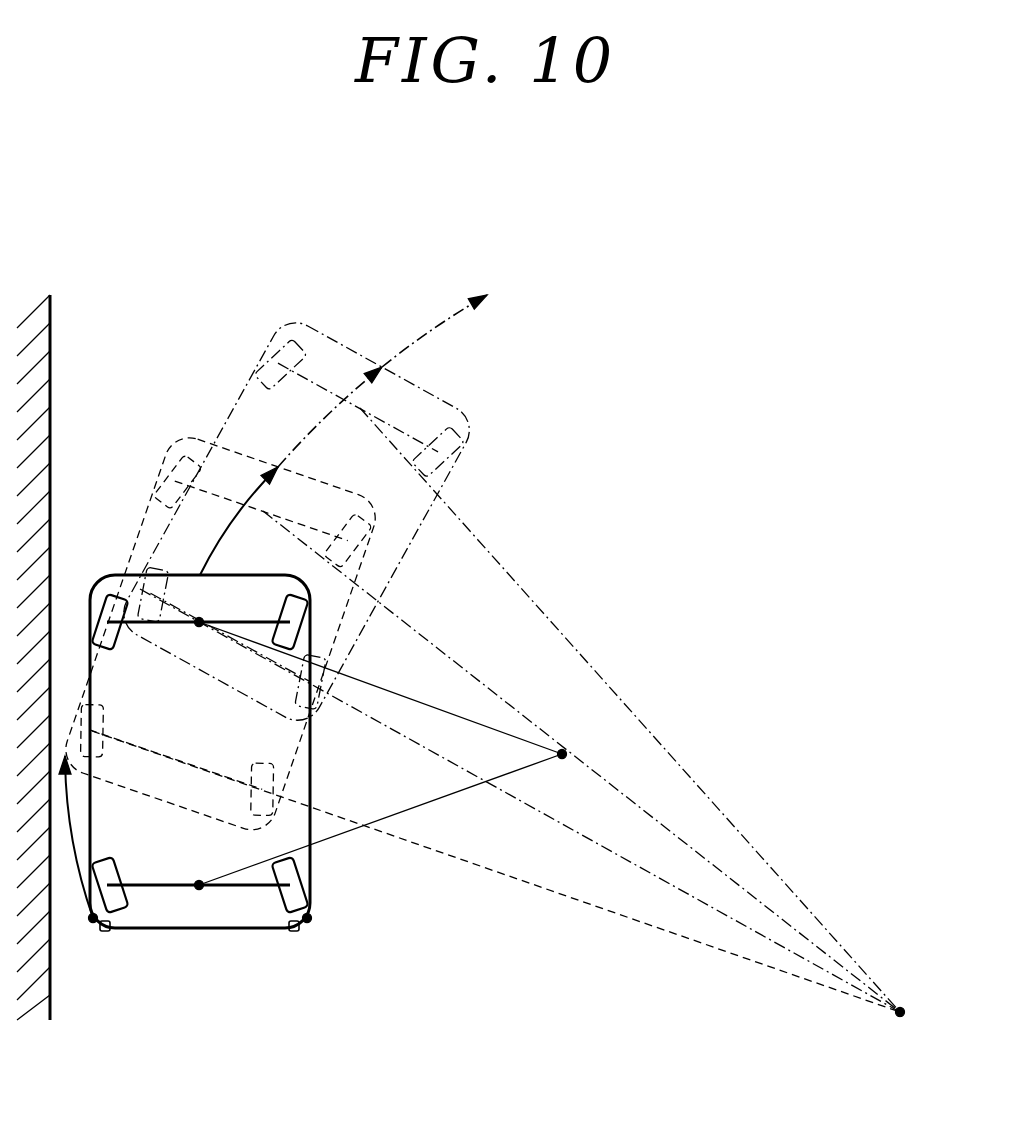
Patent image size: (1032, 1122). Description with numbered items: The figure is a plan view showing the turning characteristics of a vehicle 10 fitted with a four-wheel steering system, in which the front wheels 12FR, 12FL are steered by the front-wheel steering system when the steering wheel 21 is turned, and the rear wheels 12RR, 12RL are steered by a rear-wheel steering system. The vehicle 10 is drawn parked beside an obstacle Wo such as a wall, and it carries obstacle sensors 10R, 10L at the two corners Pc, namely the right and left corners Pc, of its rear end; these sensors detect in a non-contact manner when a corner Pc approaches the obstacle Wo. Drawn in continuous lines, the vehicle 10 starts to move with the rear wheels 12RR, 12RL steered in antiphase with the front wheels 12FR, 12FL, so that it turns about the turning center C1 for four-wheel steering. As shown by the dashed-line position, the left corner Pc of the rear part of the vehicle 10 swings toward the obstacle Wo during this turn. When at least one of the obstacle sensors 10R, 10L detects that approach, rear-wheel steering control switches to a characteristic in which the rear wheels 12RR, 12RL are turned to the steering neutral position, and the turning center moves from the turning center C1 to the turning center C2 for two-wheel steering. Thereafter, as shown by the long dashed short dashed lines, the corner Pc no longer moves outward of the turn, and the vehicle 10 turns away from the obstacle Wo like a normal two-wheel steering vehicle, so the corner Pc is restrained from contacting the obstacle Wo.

The vehicle 10 is at (316, 763).
The obstacle sensor 10L is at (106, 934).
The obstacle sensor 10R is at (293, 934).
The front wheel 12FL is at (90, 614).
The front wheel 12FR is at (284, 610).
The rear wheel 12RL is at (110, 872).
The rear wheel 12RR is at (298, 872).
The steering wheel 21 is at (229, 684).
The corner Pc is at (340, 928).
The turning center C1 is at (387, 753).
The turning center C2 is at (502, 729).
The obstacle Wo is at (52, 318).